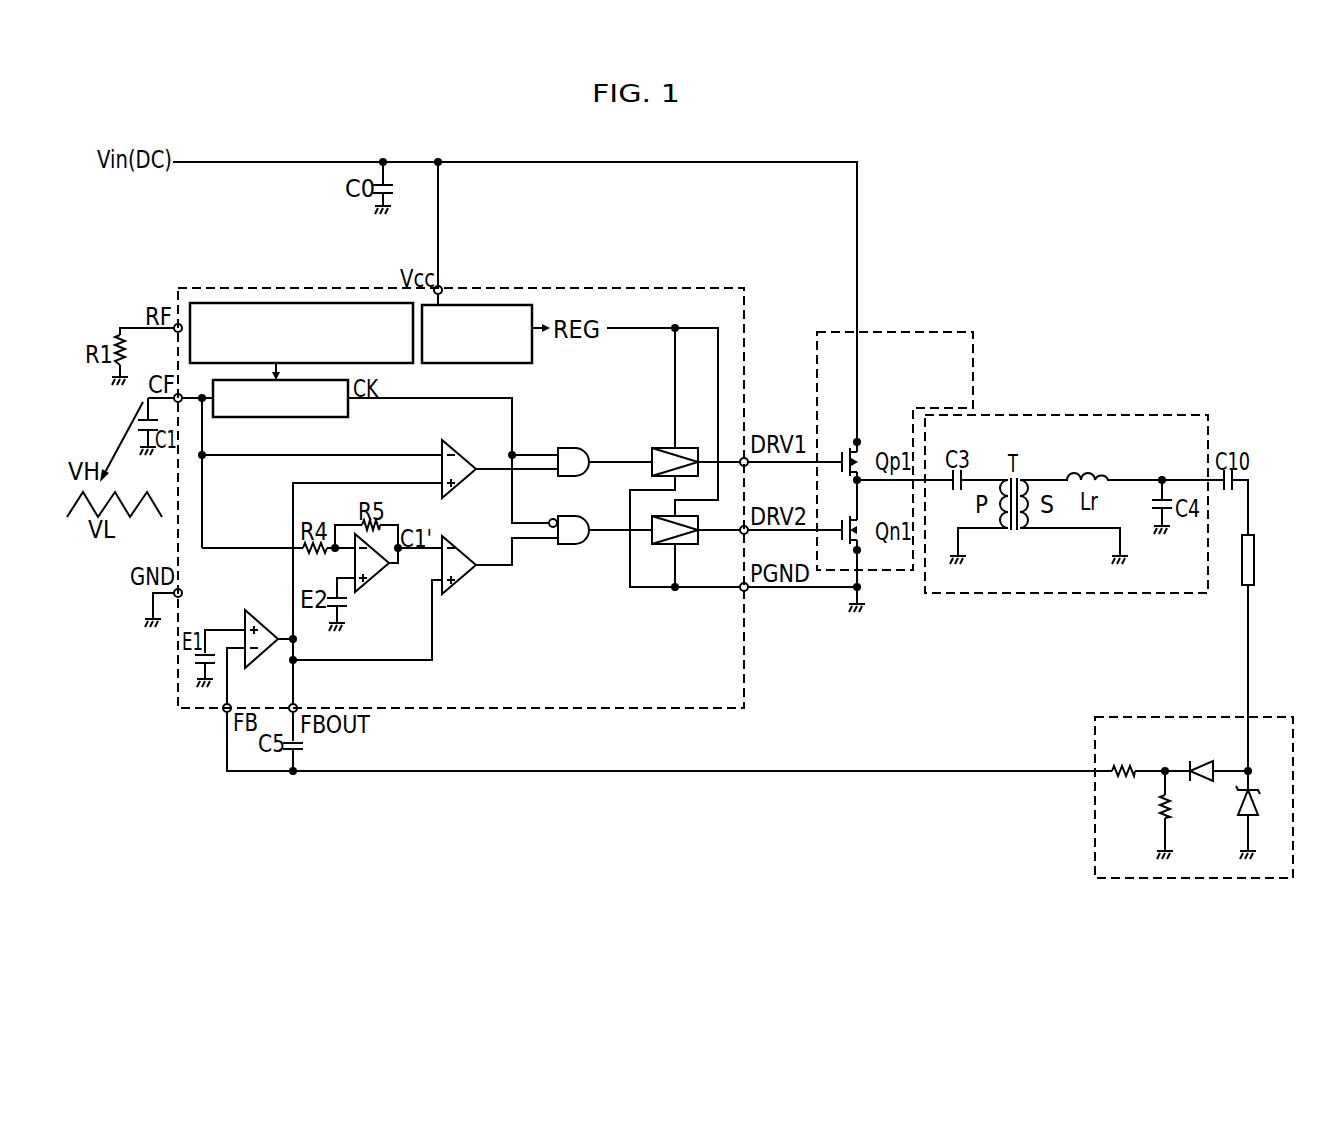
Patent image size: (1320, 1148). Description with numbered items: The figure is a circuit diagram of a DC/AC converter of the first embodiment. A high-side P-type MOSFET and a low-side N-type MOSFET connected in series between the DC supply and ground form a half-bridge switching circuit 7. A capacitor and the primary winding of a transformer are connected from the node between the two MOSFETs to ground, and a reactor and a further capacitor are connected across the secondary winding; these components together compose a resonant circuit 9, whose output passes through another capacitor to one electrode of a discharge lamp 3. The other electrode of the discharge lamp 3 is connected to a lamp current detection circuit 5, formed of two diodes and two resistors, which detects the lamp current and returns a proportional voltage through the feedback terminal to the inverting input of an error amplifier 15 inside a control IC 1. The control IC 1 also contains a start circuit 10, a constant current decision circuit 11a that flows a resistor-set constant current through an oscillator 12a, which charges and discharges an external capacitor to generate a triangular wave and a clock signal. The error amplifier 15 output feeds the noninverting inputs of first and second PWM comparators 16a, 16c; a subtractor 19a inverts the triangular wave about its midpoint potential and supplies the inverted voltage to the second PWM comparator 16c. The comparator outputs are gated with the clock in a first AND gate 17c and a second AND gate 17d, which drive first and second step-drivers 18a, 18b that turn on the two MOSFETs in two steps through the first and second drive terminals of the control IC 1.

The control IC 1 is at (676, 288).
The discharge lamp 3 is at (1256, 566).
The lamp current detection circuit 5 is at (1092, 824).
The switching circuit (SW network) 7 is at (915, 331).
The resonant circuit 9 is at (1163, 415).
The start circuit 10 is at (520, 305).
The constant current decision circuit 11a is at (278, 303).
The oscillator 12a is at (348, 405).
The error amplifier 15 is at (255, 611).
The first PWM comparator 16a is at (469, 450).
The second PWM comparator 16c is at (460, 590).
The first AND gate 17c is at (573, 447).
The second AND gate 17d is at (574, 548).
The first step-driver 18a is at (663, 447).
The second step-driver 18b is at (682, 547).
The subtractor 19a is at (378, 584).